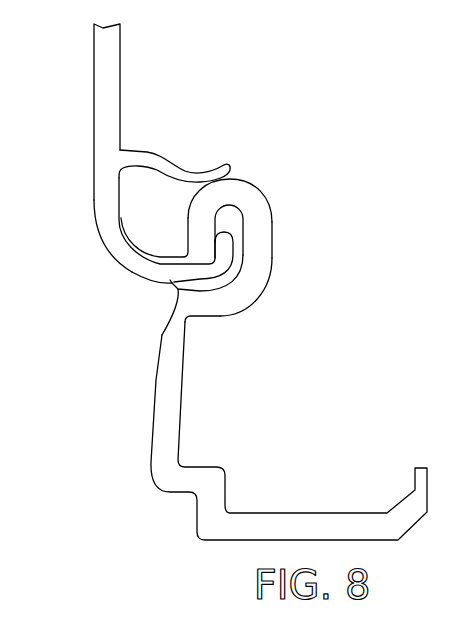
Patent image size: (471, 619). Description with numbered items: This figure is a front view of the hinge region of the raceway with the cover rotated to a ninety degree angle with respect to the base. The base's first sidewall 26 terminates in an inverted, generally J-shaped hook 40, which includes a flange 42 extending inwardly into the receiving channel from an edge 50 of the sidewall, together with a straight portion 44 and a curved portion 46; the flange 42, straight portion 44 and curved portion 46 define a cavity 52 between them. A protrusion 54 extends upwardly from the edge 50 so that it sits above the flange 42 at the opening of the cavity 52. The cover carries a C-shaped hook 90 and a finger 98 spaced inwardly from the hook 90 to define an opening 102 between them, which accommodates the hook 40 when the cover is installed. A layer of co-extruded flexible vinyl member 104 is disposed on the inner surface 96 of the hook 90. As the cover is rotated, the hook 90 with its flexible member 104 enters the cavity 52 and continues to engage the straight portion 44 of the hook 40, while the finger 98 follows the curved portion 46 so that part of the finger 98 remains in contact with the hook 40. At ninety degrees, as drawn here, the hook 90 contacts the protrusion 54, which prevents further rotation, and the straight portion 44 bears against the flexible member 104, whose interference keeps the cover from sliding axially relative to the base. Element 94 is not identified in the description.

The first sidewall 26 is at (172, 400).
The hook 40 is at (270, 288).
The flange 42 is at (218, 300).
The straight portion 44 is at (205, 247).
The curved portion 46 is at (265, 247).
The edge 50 is at (168, 313).
The cavity 52 is at (235, 218).
The protrusion 54 is at (170, 285).
The hook 90 is at (115, 247).
The outer surface of hook 94 is at (125, 262).
The inner surface 96 is at (118, 227).
The finger 98 is at (190, 173).
The opening 102 is at (148, 187).
The flexible member 104 is at (135, 241).